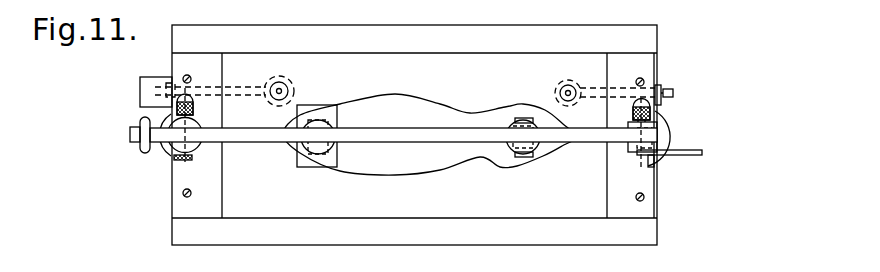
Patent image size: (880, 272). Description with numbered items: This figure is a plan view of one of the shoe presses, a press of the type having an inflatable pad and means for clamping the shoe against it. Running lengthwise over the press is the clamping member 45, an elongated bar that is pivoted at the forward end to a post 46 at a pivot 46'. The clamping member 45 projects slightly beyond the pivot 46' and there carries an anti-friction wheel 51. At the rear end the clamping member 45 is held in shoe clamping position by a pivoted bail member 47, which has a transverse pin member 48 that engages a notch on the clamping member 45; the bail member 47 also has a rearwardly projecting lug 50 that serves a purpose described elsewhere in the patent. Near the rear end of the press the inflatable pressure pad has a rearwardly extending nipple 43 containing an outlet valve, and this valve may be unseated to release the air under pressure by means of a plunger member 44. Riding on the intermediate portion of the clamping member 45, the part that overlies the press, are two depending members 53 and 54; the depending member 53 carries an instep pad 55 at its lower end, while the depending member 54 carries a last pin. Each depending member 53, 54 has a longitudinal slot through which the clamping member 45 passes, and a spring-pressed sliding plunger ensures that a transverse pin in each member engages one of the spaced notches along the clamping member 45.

The rearwardly extending nipple 43 is at (660, 88).
The plunger member 44 is at (675, 93).
The clamping member 45 is at (441, 140).
The post 46 is at (151, 140).
The pivot 46' is at (153, 184).
The pivoted bail member 47 is at (658, 130).
The transverse pin member 48 is at (645, 160).
The rearwardly projecting lug 50 is at (700, 150).
The anti-friction wheel 51 is at (140, 124).
The depending member 53 is at (320, 120).
The depending member 54 is at (512, 119).
The instep pad 55 is at (312, 158).